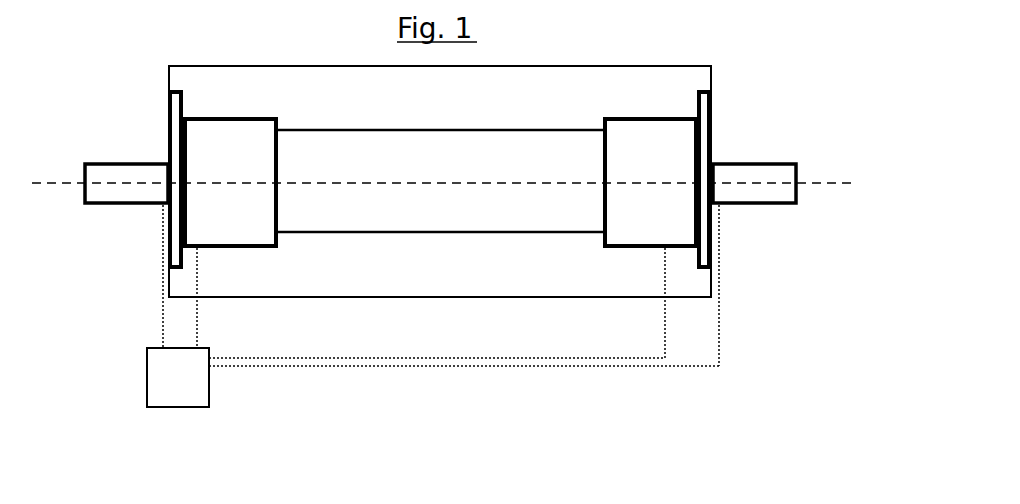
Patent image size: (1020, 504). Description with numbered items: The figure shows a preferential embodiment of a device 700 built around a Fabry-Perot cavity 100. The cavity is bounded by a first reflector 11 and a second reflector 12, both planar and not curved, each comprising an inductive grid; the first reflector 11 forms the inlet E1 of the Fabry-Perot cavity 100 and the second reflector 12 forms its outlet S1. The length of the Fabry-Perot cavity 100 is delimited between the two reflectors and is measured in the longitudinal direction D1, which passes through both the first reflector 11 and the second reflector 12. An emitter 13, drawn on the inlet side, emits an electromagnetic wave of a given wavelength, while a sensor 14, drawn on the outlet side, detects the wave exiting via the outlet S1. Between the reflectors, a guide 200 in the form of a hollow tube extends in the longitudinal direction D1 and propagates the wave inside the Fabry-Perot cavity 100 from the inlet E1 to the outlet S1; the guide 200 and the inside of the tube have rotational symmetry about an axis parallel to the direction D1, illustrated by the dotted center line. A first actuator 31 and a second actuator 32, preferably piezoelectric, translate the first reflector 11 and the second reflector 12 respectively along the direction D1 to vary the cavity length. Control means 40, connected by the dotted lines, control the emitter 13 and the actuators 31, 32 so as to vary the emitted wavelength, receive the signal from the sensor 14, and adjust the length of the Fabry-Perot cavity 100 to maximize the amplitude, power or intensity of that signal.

The Fabry-Perot cavity 100 is at (643, 66).
The first reflector 11 is at (168, 118).
The second reflector 12 is at (713, 103).
The emitter 13 is at (83, 170).
The sensor 14 is at (787, 160).
The first actuator 31 is at (240, 116).
The second actuator 32 is at (603, 117).
The guide 200 is at (352, 232).
The control means 40 is at (209, 391).
The device 700 is at (668, 387).
The inlet E1 is at (150, 223).
The outlet S1 is at (725, 222).
The longitudinal direction D1 is at (843, 183).